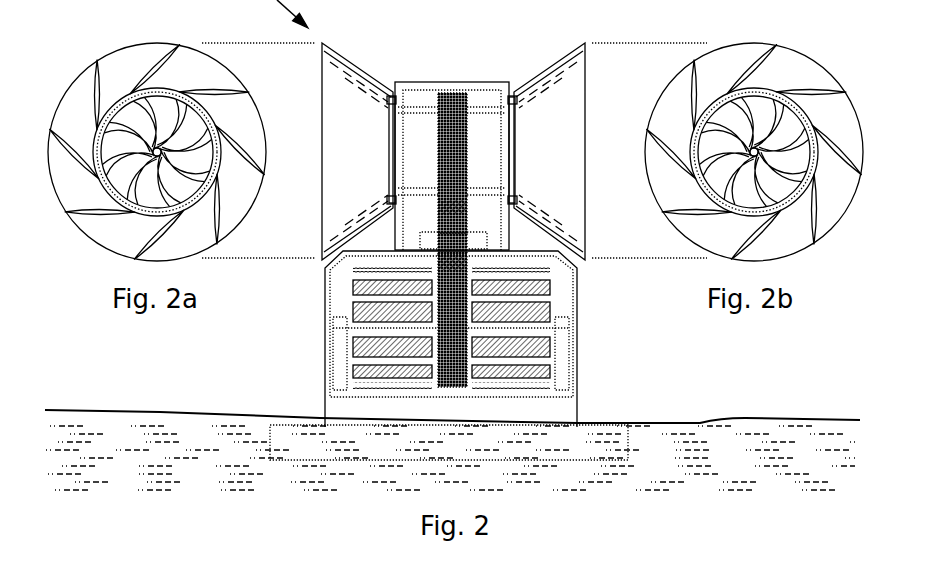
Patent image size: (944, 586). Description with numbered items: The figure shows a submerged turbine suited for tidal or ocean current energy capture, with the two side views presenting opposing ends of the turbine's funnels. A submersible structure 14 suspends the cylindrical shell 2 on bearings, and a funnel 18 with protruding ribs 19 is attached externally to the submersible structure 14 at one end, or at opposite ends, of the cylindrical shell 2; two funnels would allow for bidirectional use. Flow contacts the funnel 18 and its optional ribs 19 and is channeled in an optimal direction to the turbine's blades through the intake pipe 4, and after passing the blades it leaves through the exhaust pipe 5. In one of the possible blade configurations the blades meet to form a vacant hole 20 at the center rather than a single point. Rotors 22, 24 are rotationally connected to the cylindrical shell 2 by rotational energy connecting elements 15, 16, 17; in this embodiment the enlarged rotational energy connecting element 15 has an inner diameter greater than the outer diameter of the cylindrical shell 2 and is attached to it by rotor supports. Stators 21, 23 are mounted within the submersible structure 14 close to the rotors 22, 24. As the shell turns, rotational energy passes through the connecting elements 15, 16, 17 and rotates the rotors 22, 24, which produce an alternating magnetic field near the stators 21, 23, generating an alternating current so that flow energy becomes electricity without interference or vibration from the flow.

In FIG. 2, the cylindrical shell 2 is at (414, 162).
In FIG. 2A, the cylindrical shell 2 is at (99, 182).
In FIG. 2A, the intake pipe 4 is at (98, 153).
In FIG. 2B, the exhaust pipe 5 is at (695, 158).
In FIG. 2, the submersible structure 14 is at (577, 308).
In FIG. 2, the rotational energy connecting element 15 is at (443, 178).
In FIG. 2, the rotational energy connecting element 16 is at (443, 253).
In FIG. 2, the rotational energy connecting element 17 is at (443, 360).
In FIG. 2A, the funnel 18 is at (112, 75).
In FIG. 2A, the protruding ribs 19 is at (168, 60).
In FIG. 2B, the vacant hole 20 is at (758, 150).
In FIG. 2, the stator 21 is at (353, 272).
In FIG. 2, the rotor 22 is at (380, 314).
In FIG. 2, the stator 23 is at (550, 272).
In FIG. 2, the rotor 24 is at (500, 314).